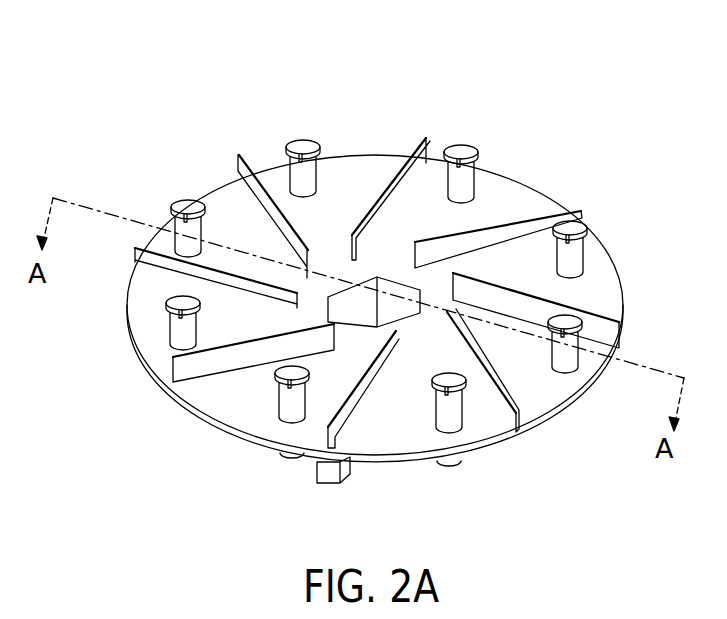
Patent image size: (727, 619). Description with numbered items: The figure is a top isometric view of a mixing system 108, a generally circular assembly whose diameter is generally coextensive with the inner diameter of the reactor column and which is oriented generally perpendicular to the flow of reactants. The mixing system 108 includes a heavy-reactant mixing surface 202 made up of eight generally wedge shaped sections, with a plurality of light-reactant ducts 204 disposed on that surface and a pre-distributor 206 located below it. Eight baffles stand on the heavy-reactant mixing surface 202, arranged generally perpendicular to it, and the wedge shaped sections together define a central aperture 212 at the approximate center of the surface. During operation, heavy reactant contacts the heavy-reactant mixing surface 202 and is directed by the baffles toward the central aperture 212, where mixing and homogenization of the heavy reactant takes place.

The mixing system 108 is at (592, 97).
The heavy-reactant mixing surface 202 is at (342, 233).
The light-reactant duct 204 is at (303, 143).
The pre-distributor 206 is at (328, 470).
The central aperture 212 is at (429, 318).